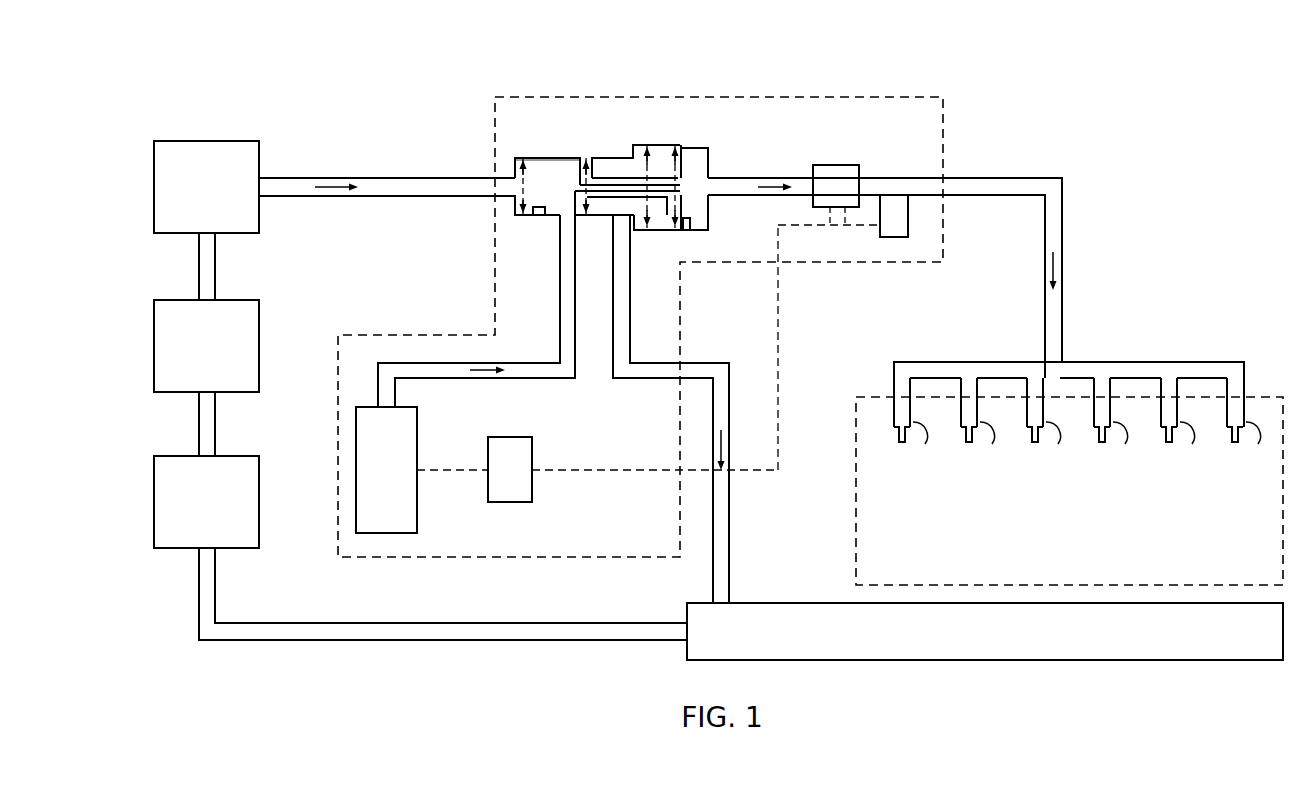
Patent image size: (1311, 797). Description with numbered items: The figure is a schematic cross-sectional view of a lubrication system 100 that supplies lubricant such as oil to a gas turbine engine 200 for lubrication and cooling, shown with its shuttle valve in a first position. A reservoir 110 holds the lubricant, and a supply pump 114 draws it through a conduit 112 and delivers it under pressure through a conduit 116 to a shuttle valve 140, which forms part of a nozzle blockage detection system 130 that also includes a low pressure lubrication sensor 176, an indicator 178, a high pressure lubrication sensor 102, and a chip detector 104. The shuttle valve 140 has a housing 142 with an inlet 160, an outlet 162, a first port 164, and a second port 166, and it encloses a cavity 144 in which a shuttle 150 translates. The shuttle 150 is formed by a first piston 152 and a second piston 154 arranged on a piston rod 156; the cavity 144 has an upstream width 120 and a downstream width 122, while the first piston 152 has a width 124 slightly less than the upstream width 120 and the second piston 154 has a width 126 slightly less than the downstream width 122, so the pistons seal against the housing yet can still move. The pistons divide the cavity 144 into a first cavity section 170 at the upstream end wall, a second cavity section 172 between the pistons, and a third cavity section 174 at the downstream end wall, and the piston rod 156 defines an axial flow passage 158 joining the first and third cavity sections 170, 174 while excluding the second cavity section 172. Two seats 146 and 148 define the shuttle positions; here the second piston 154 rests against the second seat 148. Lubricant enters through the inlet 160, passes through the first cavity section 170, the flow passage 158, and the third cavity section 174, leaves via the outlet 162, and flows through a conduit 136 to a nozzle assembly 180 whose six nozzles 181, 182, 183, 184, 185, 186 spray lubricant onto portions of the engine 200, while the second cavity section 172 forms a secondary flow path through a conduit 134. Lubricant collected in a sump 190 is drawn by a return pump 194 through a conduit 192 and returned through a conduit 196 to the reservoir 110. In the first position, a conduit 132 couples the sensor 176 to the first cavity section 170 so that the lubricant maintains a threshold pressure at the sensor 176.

The lubrication system 100 is at (893, 76).
The high pressure lubrication sensor 102 is at (880, 239).
The chip detector 104 is at (852, 165).
The reservoir 110 is at (180, 300).
The conduit 112 is at (217, 280).
The supply pump 114 is at (180, 141).
The conduit 116 is at (330, 178).
The upstream width 120 is at (523, 174).
The downstream width 122 is at (644, 215).
The width of first piston 124 is at (604, 228).
The width of second piston 126 is at (692, 206).
The nozzle blockage detection system 130 is at (552, 92).
The conduit 132 is at (560, 322).
The conduit 134 is at (622, 326).
The conduit 136 is at (778, 178).
The shuttle valve 140 is at (660, 142).
The housing 142 is at (540, 157).
The cavity 144 is at (517, 207).
The first seat 146 is at (538, 215).
The second seat 148 is at (691, 230).
The shuttle 150 is at (677, 145).
The first piston 152 is at (583, 156).
The second piston 154 is at (697, 178).
The piston rod 156 is at (614, 174).
The axial flow passage 158 is at (580, 187).
The inlet 160 is at (490, 196).
The outlet 162 is at (762, 195).
The first port 164 is at (558, 258).
The second port 166 is at (626, 258).
The first cavity section 170 is at (515, 160).
The second cavity section 172 is at (640, 144).
The third cavity section 174 is at (705, 152).
The low pressure lubrication sensor 176 is at (417, 426).
The indicator 178 is at (534, 455).
The nozzle assembly 180 is at (948, 353).
The nozzle 181 is at (917, 422).
The nozzle 182 is at (984, 422).
The nozzle 183 is at (1050, 422).
The nozzle 184 is at (1117, 422).
The nozzle 185 is at (1184, 422).
The nozzle 186 is at (1250, 422).
The sump 190 is at (782, 604).
The conduit 192 is at (574, 624).
The return pump 194 is at (180, 456).
The conduit 196 is at (223, 436).
The gas turbine engine 200 is at (855, 488).